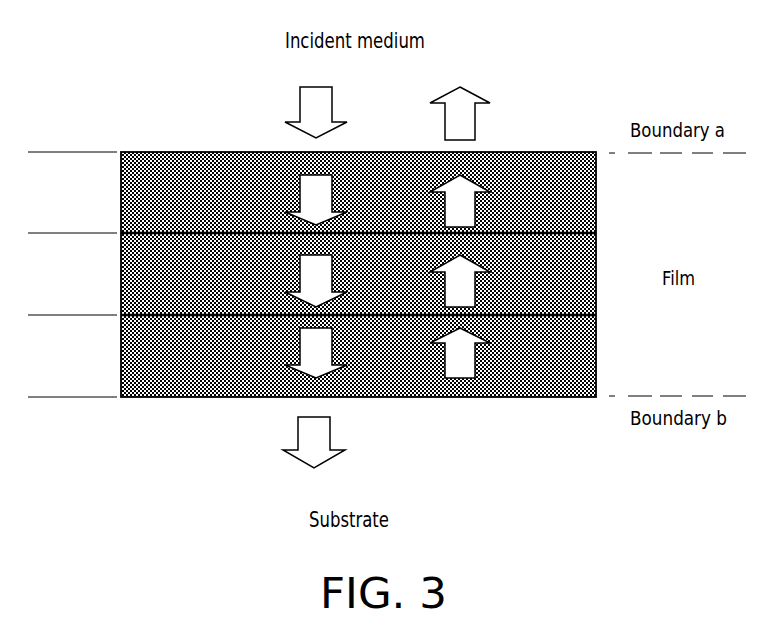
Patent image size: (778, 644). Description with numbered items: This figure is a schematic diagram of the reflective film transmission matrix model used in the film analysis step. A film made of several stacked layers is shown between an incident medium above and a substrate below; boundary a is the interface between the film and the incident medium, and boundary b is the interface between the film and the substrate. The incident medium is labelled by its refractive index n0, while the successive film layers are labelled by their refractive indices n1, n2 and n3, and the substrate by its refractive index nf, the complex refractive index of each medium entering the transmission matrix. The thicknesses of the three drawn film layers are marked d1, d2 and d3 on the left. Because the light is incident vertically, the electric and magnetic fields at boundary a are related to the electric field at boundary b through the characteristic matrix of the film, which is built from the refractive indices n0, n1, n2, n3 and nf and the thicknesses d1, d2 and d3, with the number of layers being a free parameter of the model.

The refractive index of incident medium n0 is at (206, 129).
The refractive index of first film layer n1 is at (206, 196).
The refractive index of second film layer n2 is at (206, 276).
The refractive index of third film layer n3 is at (206, 361).
The refractive index of substrate nf is at (205, 432).
The thickness of first film layer d1 is at (58, 153).
The thickness of second film layer d2 is at (58, 234).
The thickness of third film layer d3 is at (58, 316).